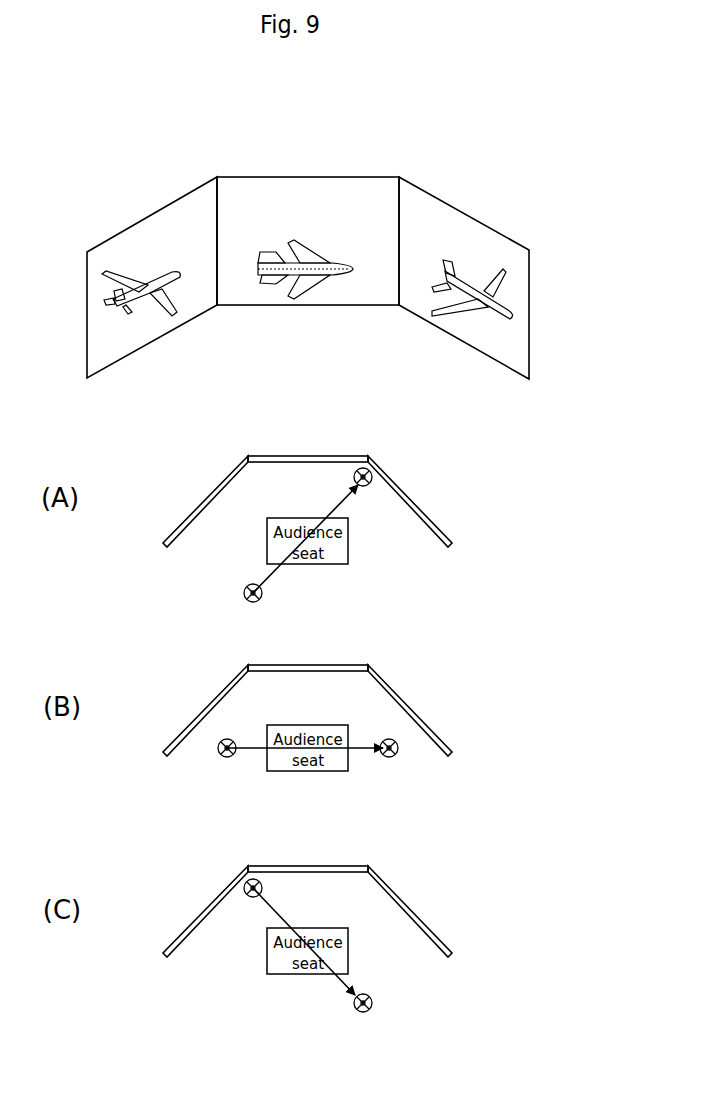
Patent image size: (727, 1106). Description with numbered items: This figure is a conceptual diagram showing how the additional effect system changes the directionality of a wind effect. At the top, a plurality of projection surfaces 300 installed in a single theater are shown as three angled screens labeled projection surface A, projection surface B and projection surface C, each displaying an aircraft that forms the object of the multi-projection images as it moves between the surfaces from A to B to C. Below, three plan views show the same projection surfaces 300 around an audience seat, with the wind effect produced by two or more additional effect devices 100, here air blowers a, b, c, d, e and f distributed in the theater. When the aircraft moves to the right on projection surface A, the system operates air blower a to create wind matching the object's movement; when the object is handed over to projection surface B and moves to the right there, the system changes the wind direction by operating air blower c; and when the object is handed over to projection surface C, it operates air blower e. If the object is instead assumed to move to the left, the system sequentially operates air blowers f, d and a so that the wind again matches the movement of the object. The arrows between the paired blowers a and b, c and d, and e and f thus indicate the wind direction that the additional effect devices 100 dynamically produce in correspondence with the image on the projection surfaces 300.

The additional effect device 100 is at (308, 739).
The projection surface 300 is at (307, 547).
The projection surface A is at (152, 277).
The projection surface B is at (308, 241).
The projection surface C is at (464, 278).
The air blower a is at (245, 593).
The air blower b is at (366, 488).
The air blower c is at (222, 748).
The air blower d is at (394, 748).
The air blower e is at (253, 897).
The air blower f is at (371, 1003).